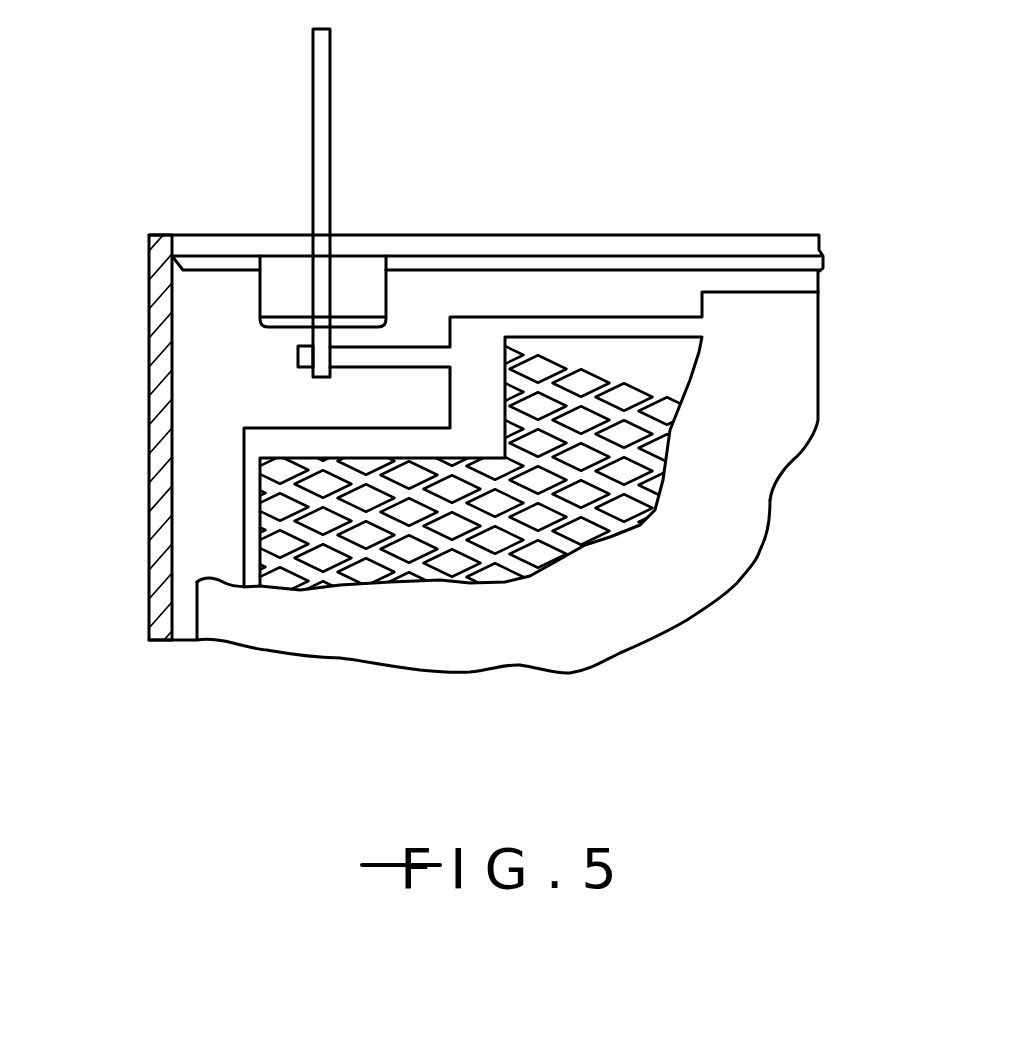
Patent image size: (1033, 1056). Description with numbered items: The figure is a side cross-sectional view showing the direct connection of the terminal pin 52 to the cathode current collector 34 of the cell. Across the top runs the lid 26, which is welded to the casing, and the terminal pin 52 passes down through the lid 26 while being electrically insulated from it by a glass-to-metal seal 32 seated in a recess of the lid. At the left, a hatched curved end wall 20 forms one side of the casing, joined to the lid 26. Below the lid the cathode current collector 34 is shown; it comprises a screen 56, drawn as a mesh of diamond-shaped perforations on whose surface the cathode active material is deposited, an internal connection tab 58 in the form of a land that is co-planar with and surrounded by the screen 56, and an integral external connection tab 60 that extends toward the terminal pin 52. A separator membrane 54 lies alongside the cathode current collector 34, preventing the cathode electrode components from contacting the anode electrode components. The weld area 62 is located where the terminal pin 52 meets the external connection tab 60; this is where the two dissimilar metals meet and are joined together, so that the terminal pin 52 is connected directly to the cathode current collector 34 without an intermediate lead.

The curved end wall 20 is at (150, 360).
The lid 26 is at (600, 243).
The glass-to-metal seal 32 is at (295, 282).
The cathode current collector 34 is at (663, 428).
The terminal pin 52 is at (331, 128).
The separator membrane 54 is at (770, 362).
The screen 56 is at (628, 357).
The internal connection tab 58 is at (479, 342).
The external connection tab 60 is at (402, 348).
The weld area 62 is at (318, 353).